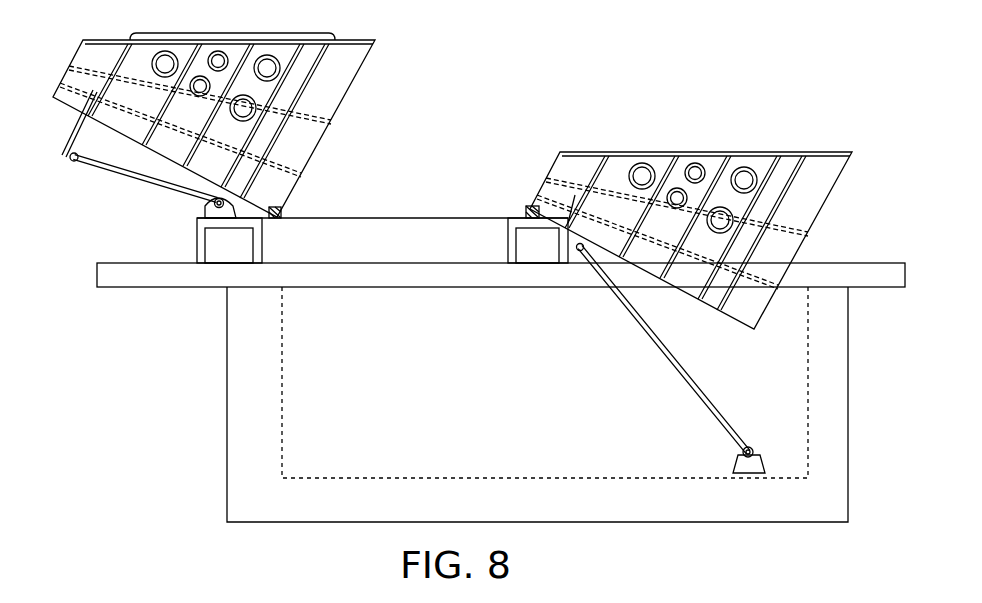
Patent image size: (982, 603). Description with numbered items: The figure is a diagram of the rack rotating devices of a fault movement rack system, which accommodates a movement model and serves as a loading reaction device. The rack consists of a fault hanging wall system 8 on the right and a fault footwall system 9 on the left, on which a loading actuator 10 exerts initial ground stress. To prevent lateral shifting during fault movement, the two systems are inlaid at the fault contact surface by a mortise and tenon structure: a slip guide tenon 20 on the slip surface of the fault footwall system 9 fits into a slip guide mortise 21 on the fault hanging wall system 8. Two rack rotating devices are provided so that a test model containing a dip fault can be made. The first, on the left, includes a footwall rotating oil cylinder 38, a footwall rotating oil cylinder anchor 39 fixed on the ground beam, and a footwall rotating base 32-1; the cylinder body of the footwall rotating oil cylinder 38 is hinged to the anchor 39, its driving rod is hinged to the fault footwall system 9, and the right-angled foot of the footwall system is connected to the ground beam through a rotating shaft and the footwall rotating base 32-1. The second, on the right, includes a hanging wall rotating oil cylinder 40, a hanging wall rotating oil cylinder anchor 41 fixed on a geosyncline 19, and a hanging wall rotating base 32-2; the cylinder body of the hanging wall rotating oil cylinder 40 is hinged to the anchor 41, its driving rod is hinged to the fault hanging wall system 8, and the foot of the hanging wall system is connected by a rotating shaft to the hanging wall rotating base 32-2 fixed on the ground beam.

The fault hanging wall system 8 is at (810, 210).
The fault footwall system 9 is at (196, 116).
The loading actuator 10 is at (163, 62).
The geosyncline 19 is at (243, 423).
The slip guide tenon 20 is at (223, 35).
The slip guide mortise 21 is at (667, 157).
The footwall rotating base 32-1 is at (277, 213).
The hanging wall rotating base 32-2 is at (530, 212).
The footwall rotating oil cylinder 38 is at (145, 180).
The footwall rotating oil cylinder anchor 39 is at (218, 202).
The hanging wall rotating oil cylinder 40 is at (675, 372).
The hanging wall rotating oil cylinder anchor 41 is at (750, 452).